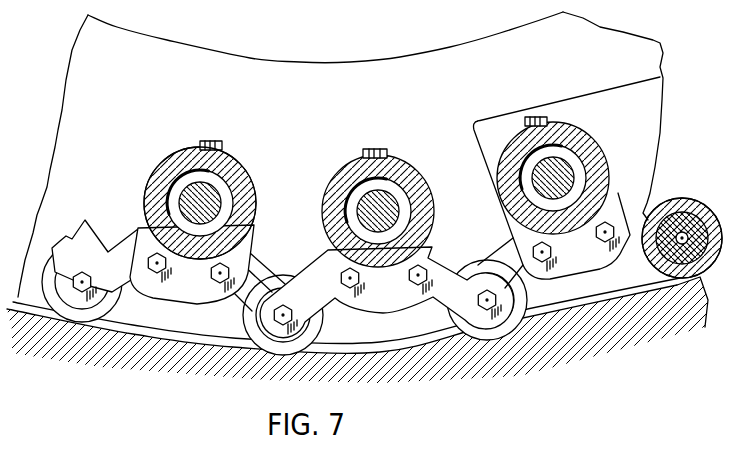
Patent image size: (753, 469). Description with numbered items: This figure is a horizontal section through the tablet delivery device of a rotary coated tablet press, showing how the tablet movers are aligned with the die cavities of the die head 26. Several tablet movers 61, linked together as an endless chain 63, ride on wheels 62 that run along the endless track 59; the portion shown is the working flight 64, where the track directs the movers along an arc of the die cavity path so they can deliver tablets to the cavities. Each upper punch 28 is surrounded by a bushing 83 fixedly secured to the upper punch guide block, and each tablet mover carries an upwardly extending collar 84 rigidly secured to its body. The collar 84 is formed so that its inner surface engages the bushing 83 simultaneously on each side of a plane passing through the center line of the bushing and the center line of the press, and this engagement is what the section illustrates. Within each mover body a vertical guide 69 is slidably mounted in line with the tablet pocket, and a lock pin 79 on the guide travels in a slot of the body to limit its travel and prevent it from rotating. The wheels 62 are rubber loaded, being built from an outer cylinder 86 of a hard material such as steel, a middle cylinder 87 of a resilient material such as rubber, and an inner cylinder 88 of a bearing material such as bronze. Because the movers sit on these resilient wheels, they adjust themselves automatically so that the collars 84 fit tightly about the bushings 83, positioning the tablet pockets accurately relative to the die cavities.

The die head 26 is at (295, 182).
The upper punches 28 is at (182, 193).
The endless track 59 is at (97, 335).
The tablet movers 61 is at (138, 235).
The wheels 62 is at (120, 301).
The endless chain 63 is at (248, 292).
The working flight 64 is at (133, 191).
The vertical guide 69 is at (222, 193).
The lock pin 79 is at (220, 147).
The bushing 83 is at (247, 203).
The collar 84 is at (242, 253).
The outer cylinder 86 is at (663, 229).
The middle cylinder 87 is at (657, 242).
The inner cylinder 88 is at (650, 265).